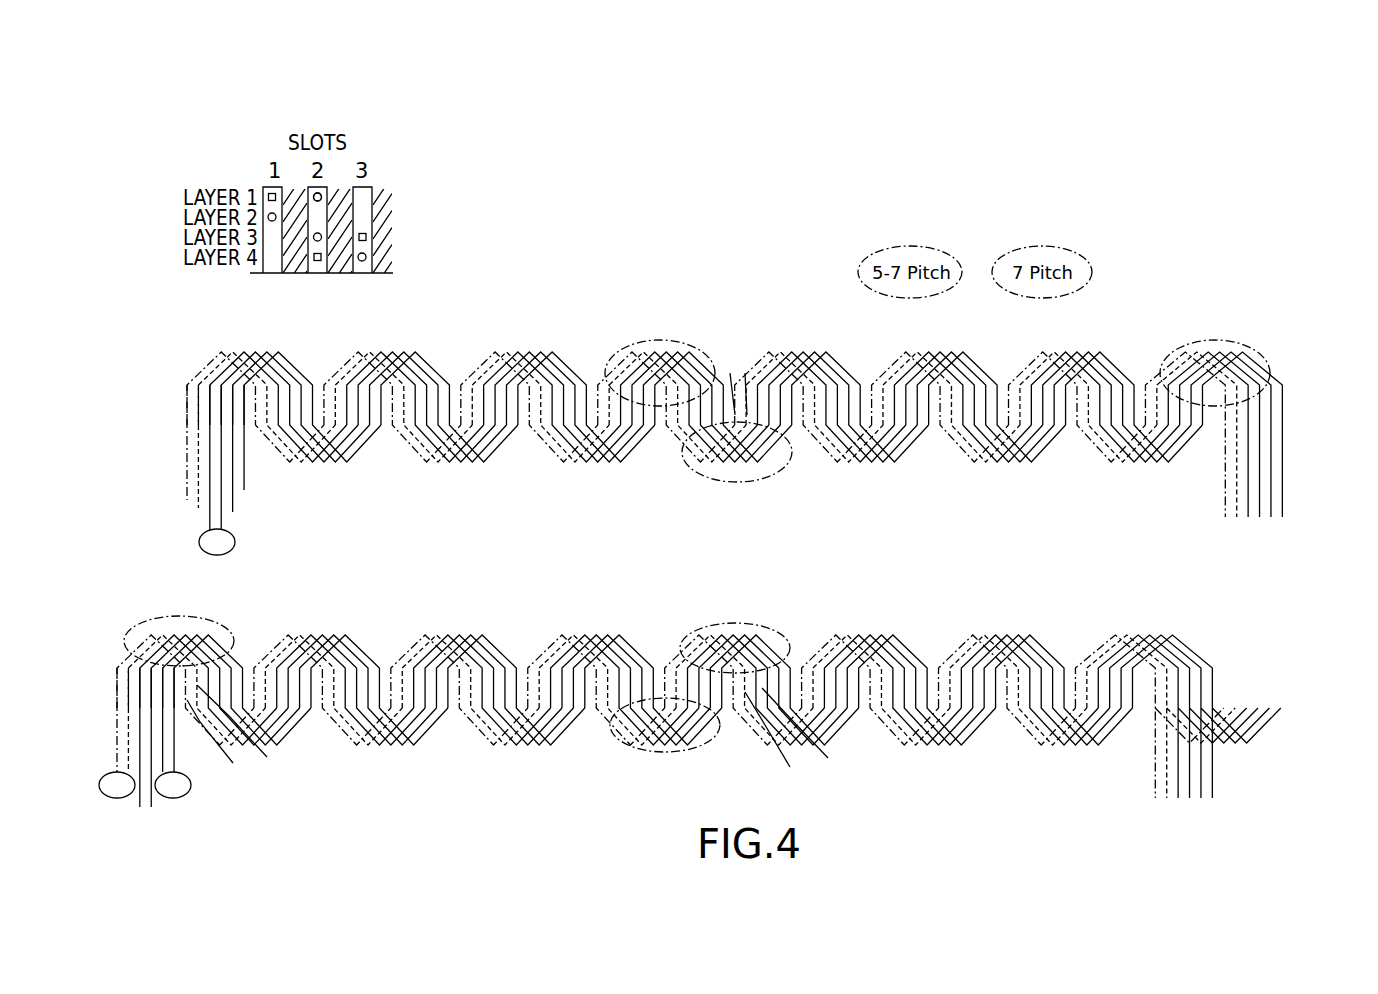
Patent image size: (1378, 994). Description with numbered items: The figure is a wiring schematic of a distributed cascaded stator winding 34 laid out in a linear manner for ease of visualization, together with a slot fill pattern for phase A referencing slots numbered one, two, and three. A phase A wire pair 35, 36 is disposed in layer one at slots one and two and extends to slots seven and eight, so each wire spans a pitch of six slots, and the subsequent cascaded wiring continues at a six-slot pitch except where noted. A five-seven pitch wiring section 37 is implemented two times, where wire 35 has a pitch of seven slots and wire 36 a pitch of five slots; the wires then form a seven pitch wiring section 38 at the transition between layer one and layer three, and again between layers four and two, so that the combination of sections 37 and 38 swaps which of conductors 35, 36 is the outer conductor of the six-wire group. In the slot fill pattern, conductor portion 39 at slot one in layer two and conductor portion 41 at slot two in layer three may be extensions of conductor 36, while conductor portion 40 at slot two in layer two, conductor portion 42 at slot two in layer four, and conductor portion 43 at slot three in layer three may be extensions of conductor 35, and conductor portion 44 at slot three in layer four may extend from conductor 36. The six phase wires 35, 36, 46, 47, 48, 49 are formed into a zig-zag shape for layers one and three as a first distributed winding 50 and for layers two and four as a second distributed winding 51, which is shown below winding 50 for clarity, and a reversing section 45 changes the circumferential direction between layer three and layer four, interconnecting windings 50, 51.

The distributed cascaded stator winding 34 is at (692, 192).
The phase A wire 35 is at (268, 192).
The phase A wire 36 is at (313, 195).
The 5-7 pitch wiring section 37 is at (642, 343).
The seven pitch wiring section 38 is at (688, 468).
The conductor portion 39 is at (272, 222).
The conductor portion 40 is at (318, 200).
The conductor portion 41 is at (317, 243).
The conductor portion 42 is at (320, 263).
The conductor portion 43 is at (363, 231).
The conductor portion 44 is at (362, 263).
The reversing section 45 is at (1272, 746).
The phase wire 46 is at (212, 355).
The phase wire 47 is at (222, 448).
The phase wire 48 is at (232, 467).
The phase wire 49 is at (240, 478).
The first distributed winding 50 is at (1296, 415).
The second distributed winding 51 is at (1255, 669).